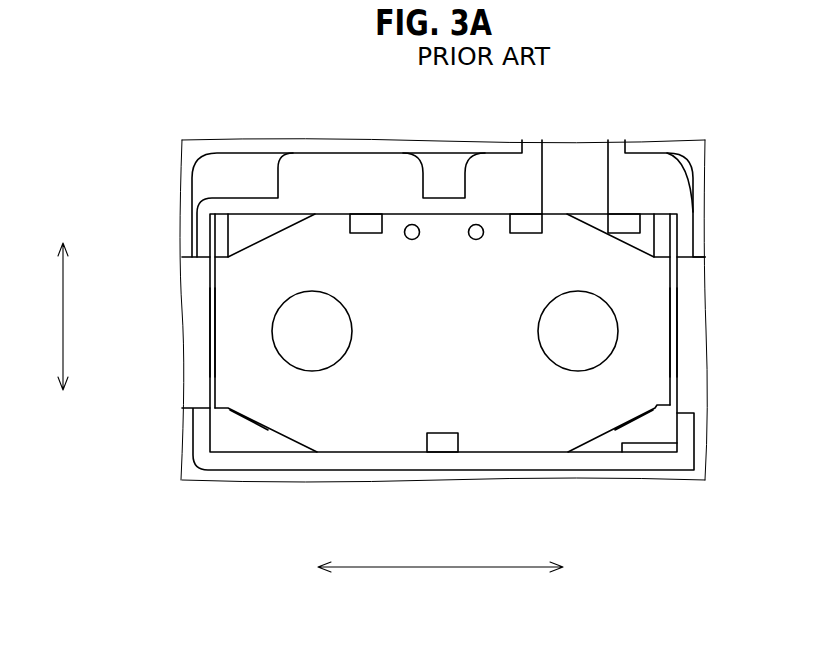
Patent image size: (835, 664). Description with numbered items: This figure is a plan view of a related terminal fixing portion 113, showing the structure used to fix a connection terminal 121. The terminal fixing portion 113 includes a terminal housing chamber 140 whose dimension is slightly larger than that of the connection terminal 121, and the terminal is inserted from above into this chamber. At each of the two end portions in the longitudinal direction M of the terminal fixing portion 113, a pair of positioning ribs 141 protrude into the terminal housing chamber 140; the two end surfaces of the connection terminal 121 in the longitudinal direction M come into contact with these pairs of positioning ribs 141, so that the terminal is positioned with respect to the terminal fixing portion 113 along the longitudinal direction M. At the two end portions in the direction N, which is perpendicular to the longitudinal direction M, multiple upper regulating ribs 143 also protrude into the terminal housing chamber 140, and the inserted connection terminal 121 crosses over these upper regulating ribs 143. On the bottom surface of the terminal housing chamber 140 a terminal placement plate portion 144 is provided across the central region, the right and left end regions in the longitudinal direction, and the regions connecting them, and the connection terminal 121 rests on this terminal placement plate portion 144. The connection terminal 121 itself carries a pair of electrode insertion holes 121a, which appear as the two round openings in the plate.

The terminal fixing portion 113 is at (243, 198).
The terminal housing chamber 140 is at (278, 224).
The upper regulating ribs 143 is at (368, 216).
The connection terminal 121 is at (587, 405).
The electrode insertion holes 121a is at (300, 296).
The positioning ribs 141 is at (210, 377).
The terminal placement plate portion 144 is at (230, 432).
The direction N is at (60, 320).
The longitudinal direction M is at (443, 570).